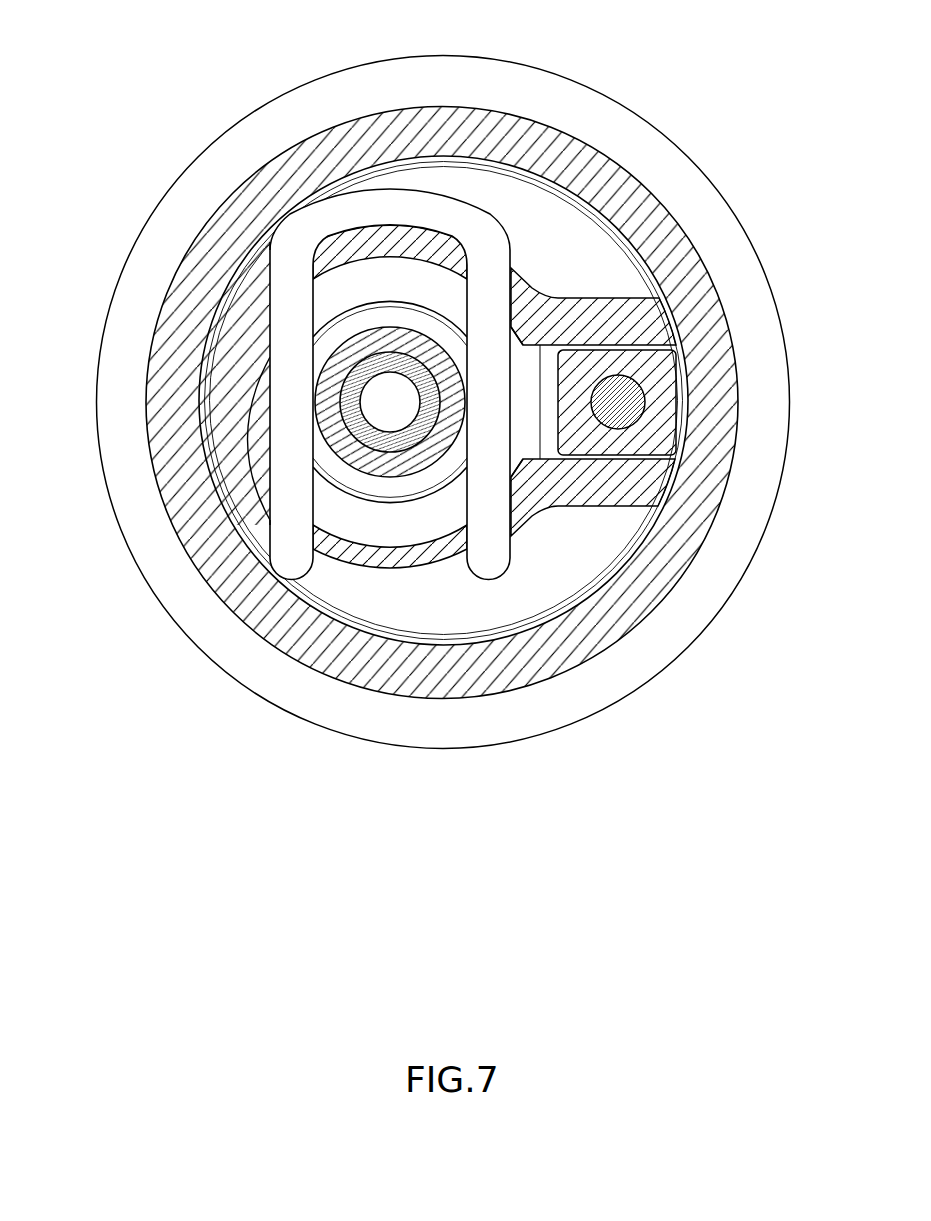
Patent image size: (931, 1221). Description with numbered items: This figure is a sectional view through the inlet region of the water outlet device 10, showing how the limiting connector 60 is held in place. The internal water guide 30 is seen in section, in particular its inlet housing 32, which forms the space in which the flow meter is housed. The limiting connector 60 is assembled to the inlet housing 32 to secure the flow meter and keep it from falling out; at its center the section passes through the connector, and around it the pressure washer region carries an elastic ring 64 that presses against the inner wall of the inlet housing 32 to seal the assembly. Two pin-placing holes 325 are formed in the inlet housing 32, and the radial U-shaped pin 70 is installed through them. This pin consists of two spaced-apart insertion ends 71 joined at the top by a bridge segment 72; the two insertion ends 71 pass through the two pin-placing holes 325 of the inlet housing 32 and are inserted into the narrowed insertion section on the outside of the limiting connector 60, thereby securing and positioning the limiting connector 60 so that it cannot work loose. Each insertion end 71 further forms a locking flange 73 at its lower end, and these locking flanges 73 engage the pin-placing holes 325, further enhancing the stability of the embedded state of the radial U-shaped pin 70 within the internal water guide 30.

The rotary device 10 is at (236, 106).
The internal water guide 30 is at (702, 272).
The inlet housing 32 is at (413, 572).
The pin-placing holes 325 is at (272, 290).
The limiting connector 60 is at (450, 315).
The elastic ring 64 is at (316, 400).
The radial U-shaped pin 70 is at (428, 411).
The insertion ends 71 is at (276, 556).
The bridge segment 72 is at (384, 207).
The locking flange 73 is at (332, 585).